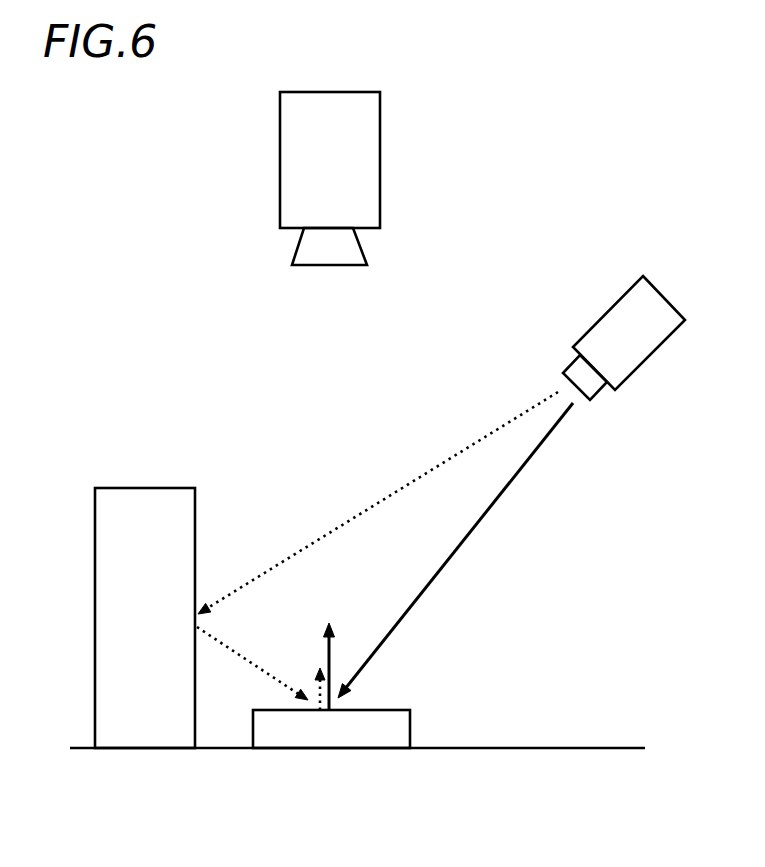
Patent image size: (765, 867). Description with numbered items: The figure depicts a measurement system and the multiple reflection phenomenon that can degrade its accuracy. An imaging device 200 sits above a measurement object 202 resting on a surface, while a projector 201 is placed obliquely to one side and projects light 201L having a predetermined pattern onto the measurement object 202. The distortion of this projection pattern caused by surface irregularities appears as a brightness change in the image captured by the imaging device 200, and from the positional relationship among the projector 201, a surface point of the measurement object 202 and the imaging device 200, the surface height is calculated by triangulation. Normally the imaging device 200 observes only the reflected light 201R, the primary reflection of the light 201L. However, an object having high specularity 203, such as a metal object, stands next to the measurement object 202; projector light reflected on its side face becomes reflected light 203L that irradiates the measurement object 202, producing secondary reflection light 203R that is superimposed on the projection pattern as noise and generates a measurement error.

The imaging device 200 is at (280, 138).
The projector 201 is at (655, 288).
The light 201L is at (525, 467).
The reflected light 201R is at (328, 642).
The measurement object 202 is at (411, 724).
The object having high specularity 203 is at (138, 487).
The reflected light 203L is at (243, 660).
The secondary reflection light 203R is at (316, 683).